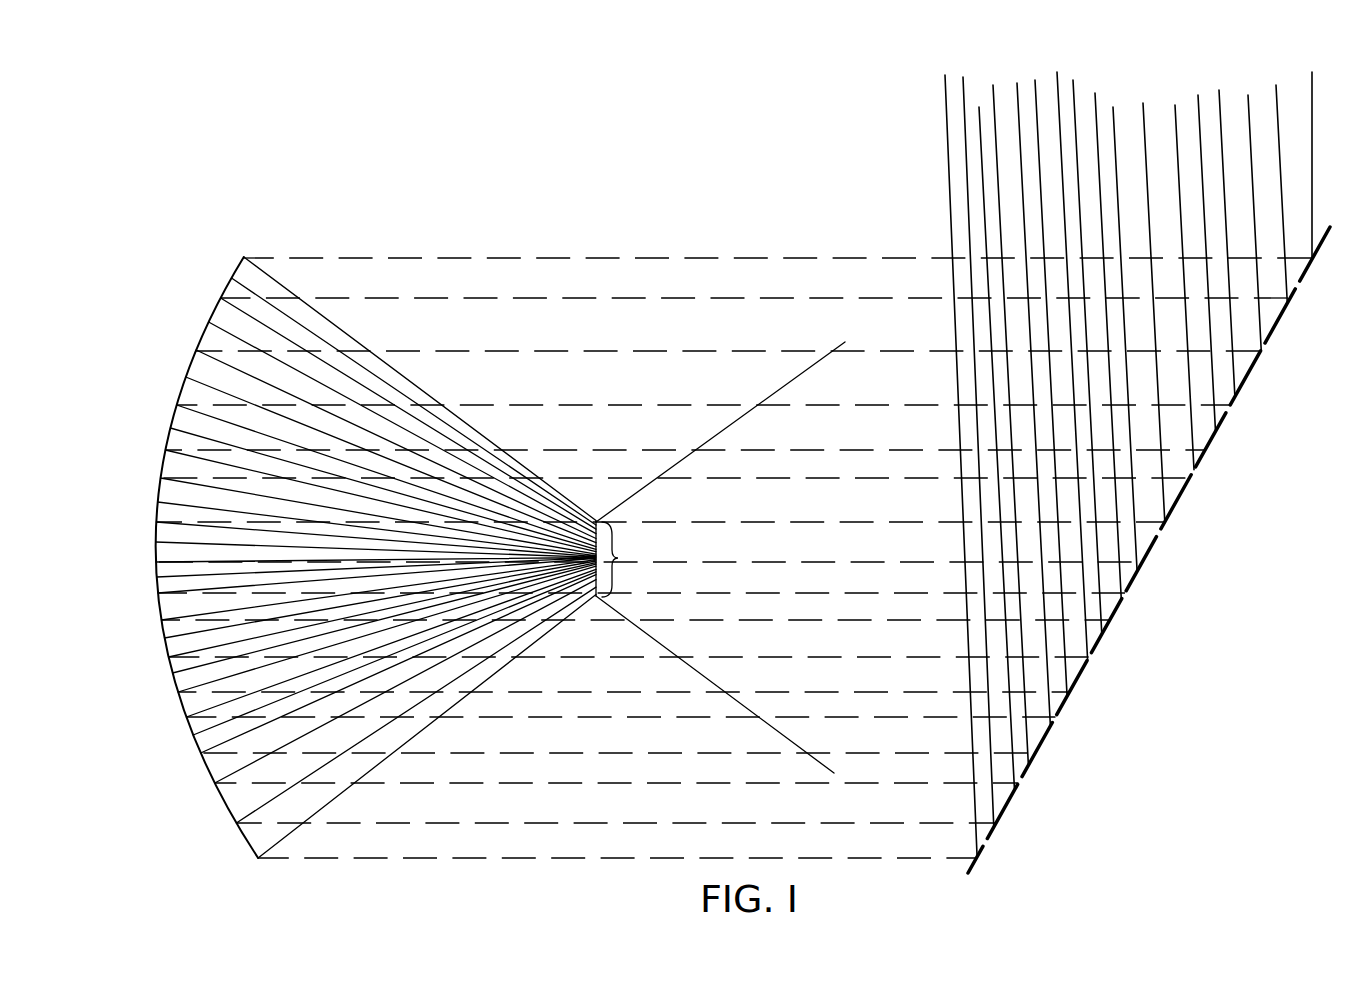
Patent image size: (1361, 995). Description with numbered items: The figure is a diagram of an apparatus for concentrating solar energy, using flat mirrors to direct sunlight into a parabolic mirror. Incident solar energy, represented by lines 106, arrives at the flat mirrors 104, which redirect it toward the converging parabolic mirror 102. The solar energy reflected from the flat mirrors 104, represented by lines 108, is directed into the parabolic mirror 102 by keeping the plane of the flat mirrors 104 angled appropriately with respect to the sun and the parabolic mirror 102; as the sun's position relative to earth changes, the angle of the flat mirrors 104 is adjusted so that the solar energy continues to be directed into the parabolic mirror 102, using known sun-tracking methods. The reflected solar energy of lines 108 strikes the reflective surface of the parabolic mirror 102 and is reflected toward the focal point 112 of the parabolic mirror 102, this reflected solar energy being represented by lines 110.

The converging parabolic mirror 102 is at (196, 341).
The flat mirrors 104 is at (1115, 610).
The lines representing incident solar energy 106 is at (1180, 72).
The lines representing reflected solar energy 108 is at (517, 298).
The lines representing solar energy reflected from parabolic mirror 110 is at (283, 837).
The focal point 112 is at (633, 559).